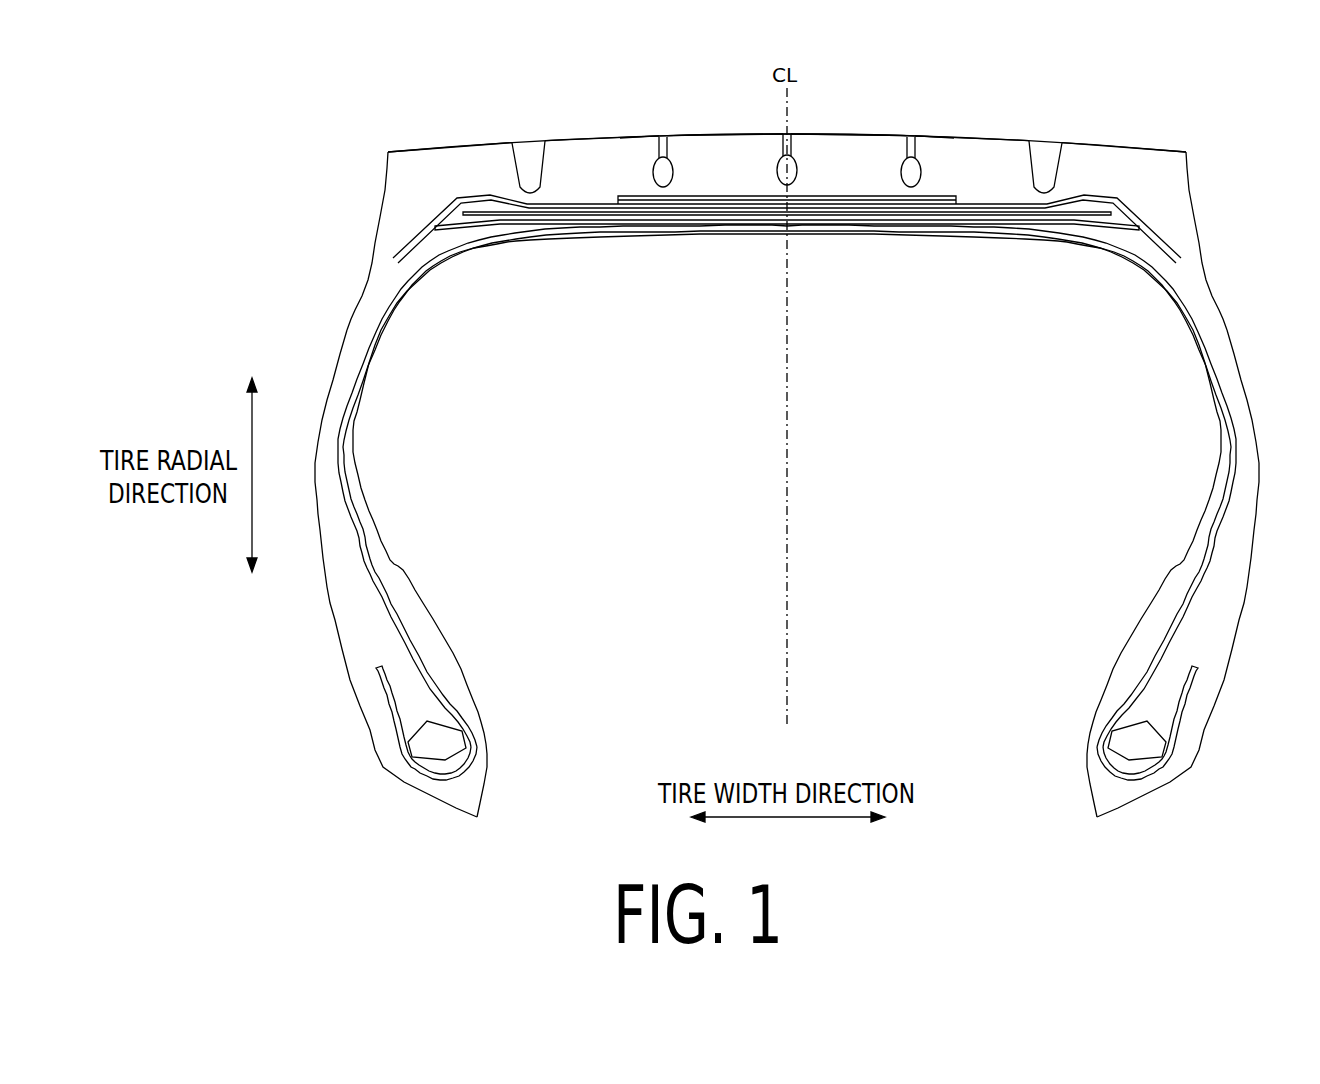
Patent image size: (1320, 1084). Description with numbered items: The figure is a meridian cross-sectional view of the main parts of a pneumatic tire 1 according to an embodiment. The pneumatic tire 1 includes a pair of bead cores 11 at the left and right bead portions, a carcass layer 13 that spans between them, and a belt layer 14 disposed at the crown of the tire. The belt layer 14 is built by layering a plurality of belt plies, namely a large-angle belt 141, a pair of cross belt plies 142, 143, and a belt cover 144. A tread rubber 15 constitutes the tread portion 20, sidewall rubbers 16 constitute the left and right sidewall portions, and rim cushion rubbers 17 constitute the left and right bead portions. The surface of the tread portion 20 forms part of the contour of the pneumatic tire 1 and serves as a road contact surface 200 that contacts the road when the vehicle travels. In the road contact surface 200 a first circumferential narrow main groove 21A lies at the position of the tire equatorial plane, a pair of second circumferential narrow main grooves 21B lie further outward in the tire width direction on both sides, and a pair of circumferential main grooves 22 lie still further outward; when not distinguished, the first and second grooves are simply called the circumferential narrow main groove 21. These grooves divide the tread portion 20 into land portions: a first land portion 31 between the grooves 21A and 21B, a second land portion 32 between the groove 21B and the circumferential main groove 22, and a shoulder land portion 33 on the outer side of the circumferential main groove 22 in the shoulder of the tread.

The pneumatic tire 1 is at (1246, 120).
The bead core 11 is at (440, 743).
The carcass layer 13 is at (1150, 270).
The belt layer 14 is at (1043, 293).
The large-angle belt 141 is at (1020, 218).
The cross belt ply 142 is at (973, 212).
The cross belt ply 143 is at (920, 205).
The belt cover 144 is at (872, 198).
The tread rubber 15 is at (1133, 160).
The sidewall rubber 16 is at (333, 380).
The rim cushion rubber 17 is at (377, 723).
The tread portion 20 is at (1010, 137).
The road contact surface 200 is at (705, 132).
The circumferential narrow main groove 21 is at (801, 121).
The first circumferential narrow main groove 21A is at (787, 133).
The second circumferential narrow main groove 21B is at (655, 137).
The circumferential main groove 22 is at (528, 155).
The first land portion 31 is at (755, 133).
The second land portion 32 is at (602, 137).
The shoulder land portion 33 is at (448, 147).